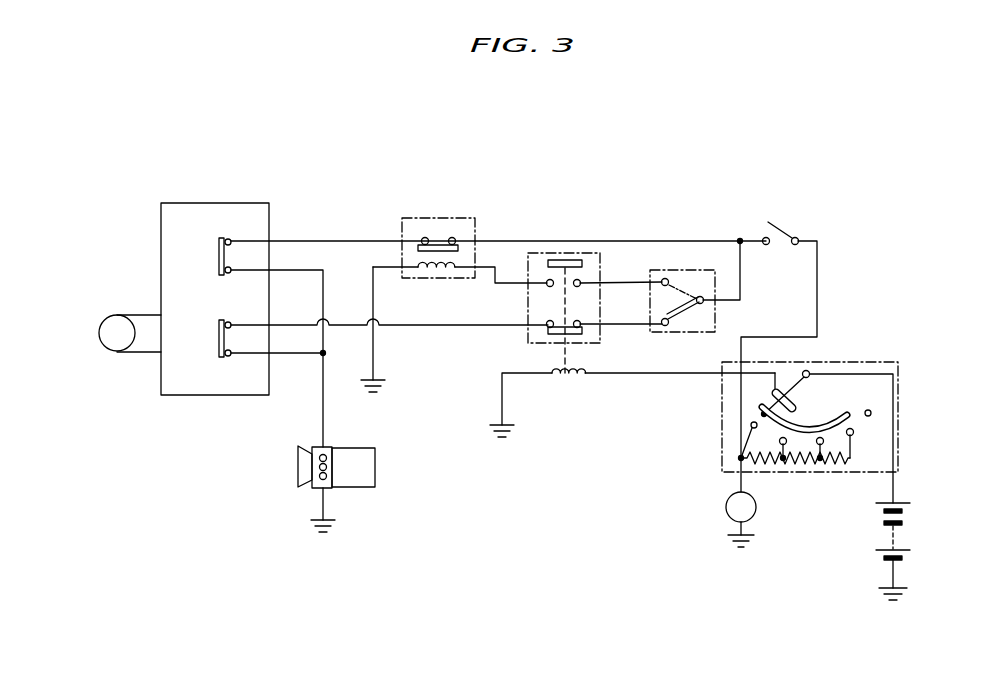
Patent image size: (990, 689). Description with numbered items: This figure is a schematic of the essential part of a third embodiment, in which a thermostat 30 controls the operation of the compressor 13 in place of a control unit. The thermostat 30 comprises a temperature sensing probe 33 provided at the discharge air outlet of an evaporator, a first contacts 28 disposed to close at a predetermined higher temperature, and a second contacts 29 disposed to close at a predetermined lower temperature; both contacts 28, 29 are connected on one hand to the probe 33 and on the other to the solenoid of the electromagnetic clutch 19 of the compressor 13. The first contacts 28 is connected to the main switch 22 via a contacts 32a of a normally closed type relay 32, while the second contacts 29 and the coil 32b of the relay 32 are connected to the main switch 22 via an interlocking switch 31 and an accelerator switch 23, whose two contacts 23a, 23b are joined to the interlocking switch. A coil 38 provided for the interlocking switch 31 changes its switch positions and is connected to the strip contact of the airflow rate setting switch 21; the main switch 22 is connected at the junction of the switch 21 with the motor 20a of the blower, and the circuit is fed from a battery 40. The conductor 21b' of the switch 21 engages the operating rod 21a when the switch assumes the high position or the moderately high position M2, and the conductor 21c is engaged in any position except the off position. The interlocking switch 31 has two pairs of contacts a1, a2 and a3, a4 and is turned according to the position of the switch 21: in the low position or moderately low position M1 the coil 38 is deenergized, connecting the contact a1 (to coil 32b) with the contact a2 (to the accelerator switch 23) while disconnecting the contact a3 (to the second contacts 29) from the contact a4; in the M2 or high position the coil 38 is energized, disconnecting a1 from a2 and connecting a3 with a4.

The thermostat 30 is at (227, 203).
The first contacts 28 is at (218, 252).
The second contacts 29 is at (218, 335).
The temperature sensing probe 33 is at (117, 353).
The electromagnetic clutch 19 is at (325, 446).
The compressor 13 is at (376, 466).
The relay 32 is at (447, 236).
The contacts of relay 32a is at (435, 237).
The coil of relay 32b is at (447, 272).
The coil 38 is at (547, 345).
The contact a1 is at (549, 287).
The contact a2 is at (578, 287).
The contact a3 is at (547, 327).
The contact a4 is at (580, 328).
The interlocking switch 31 is at (545, 345).
The accelerator switch 23 is at (706, 304).
The contact of accelerator switch 23a is at (666, 279).
The other contact of accelerator switch 23b is at (663, 326).
The main switch 22 is at (782, 228).
The airflow rate setting switch 21 is at (845, 395).
The operating rod 21a is at (810, 375).
The conductor 21b' is at (807, 396).
The conductor 21c is at (850, 416).
The moderately low position M1 is at (828, 452).
The moderately high position M2 is at (784, 461).
The motor 20a is at (757, 513).
The battery 40 is at (912, 541).